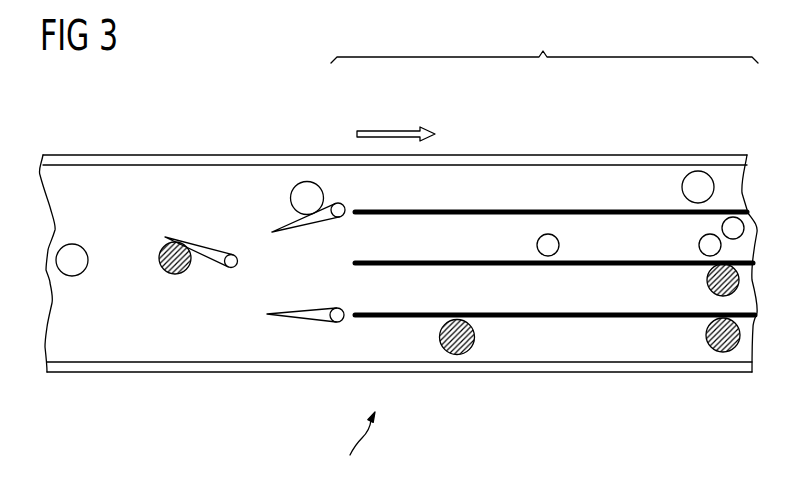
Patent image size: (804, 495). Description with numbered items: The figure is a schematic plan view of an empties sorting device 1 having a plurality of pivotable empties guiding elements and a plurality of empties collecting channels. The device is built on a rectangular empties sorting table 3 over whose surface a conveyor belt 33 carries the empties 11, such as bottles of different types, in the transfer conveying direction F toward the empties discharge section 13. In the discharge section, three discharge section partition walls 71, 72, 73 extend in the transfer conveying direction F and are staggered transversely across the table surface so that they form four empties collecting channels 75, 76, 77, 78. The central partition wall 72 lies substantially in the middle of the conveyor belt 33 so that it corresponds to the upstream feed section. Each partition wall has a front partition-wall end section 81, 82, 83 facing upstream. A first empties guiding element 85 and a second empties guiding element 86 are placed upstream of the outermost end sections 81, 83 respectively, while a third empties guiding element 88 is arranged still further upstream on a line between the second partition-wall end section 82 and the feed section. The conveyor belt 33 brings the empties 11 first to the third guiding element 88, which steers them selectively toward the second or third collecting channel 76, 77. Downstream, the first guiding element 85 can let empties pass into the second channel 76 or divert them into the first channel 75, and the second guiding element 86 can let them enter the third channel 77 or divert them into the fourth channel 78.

The empties sorting device 1 is at (356, 445).
The empties sorting table 3 is at (676, 374).
The empties 11 is at (84, 248).
The empties discharge section 13 is at (544, 43).
The conveyor belt 33 is at (152, 363).
The first discharge section partition wall 71 is at (480, 207).
The second discharge section partition wall 72 is at (477, 263).
The third discharge section partition wall 73 is at (523, 312).
The first empties collecting channel 75 is at (398, 180).
The second empties collecting channel 76 is at (442, 235).
The third empties collecting channel 77 is at (507, 288).
The fourth empties collecting channel 78 is at (600, 334).
The first partition-wall end section 81 is at (355, 207).
The second partition-wall end section 82 is at (355, 263).
The third partition-wall end section 83 is at (355, 318).
The first empties guiding element 85 is at (283, 227).
The second empties guiding element 86 is at (288, 310).
The third empties guiding element 88 is at (203, 261).
The transfer conveying direction F is at (392, 130).